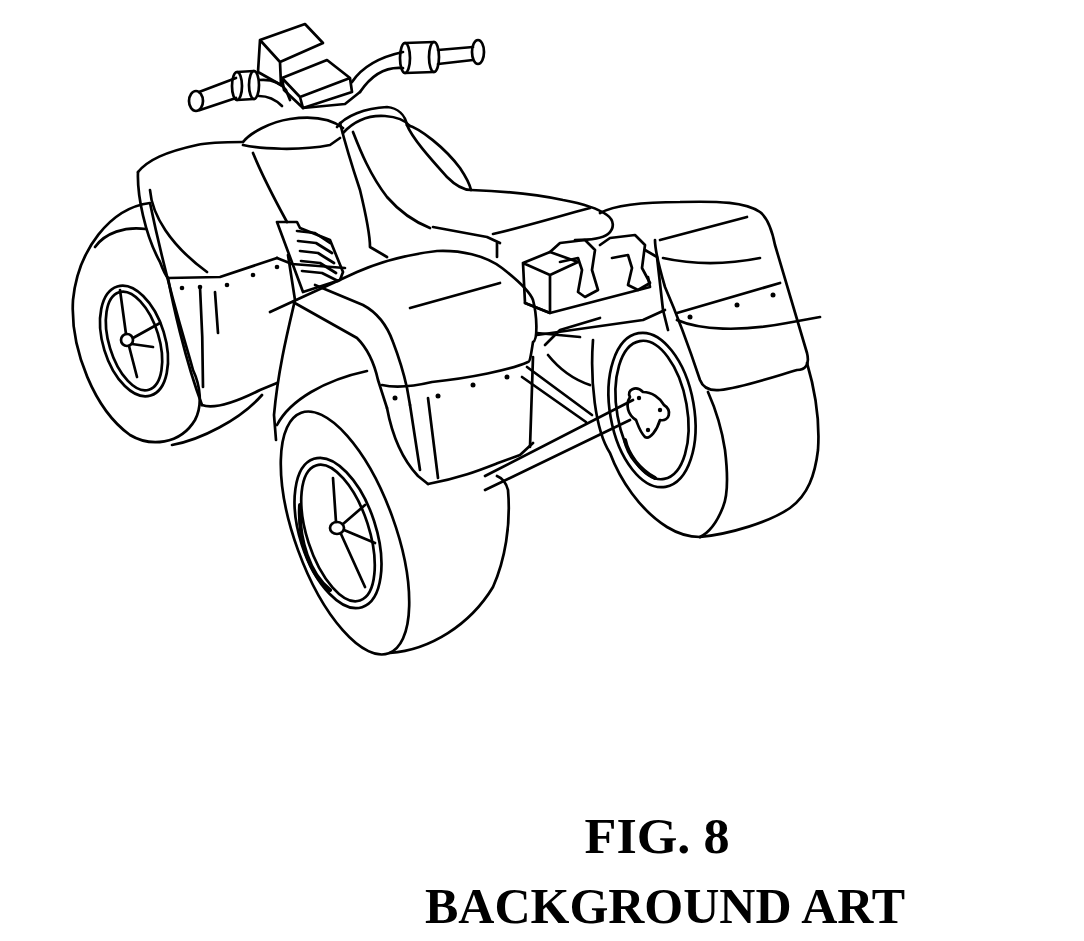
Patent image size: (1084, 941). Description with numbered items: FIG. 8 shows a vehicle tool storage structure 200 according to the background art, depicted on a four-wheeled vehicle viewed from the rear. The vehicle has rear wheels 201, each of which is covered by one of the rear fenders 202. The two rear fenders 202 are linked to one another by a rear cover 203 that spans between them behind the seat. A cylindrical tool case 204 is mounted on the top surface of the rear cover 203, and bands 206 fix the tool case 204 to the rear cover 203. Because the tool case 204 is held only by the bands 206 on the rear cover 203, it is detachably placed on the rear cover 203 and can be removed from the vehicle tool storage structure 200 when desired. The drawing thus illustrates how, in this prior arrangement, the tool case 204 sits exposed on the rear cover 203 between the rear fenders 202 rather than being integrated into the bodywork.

The vehicle tool storage structure 200 is at (692, 127).
The rear wheels 201 is at (441, 622).
The rear fenders 202 is at (443, 268).
The rear cover 203 is at (560, 330).
The cylindrical tool case 204 is at (583, 250).
The bands 206 is at (760, 258).